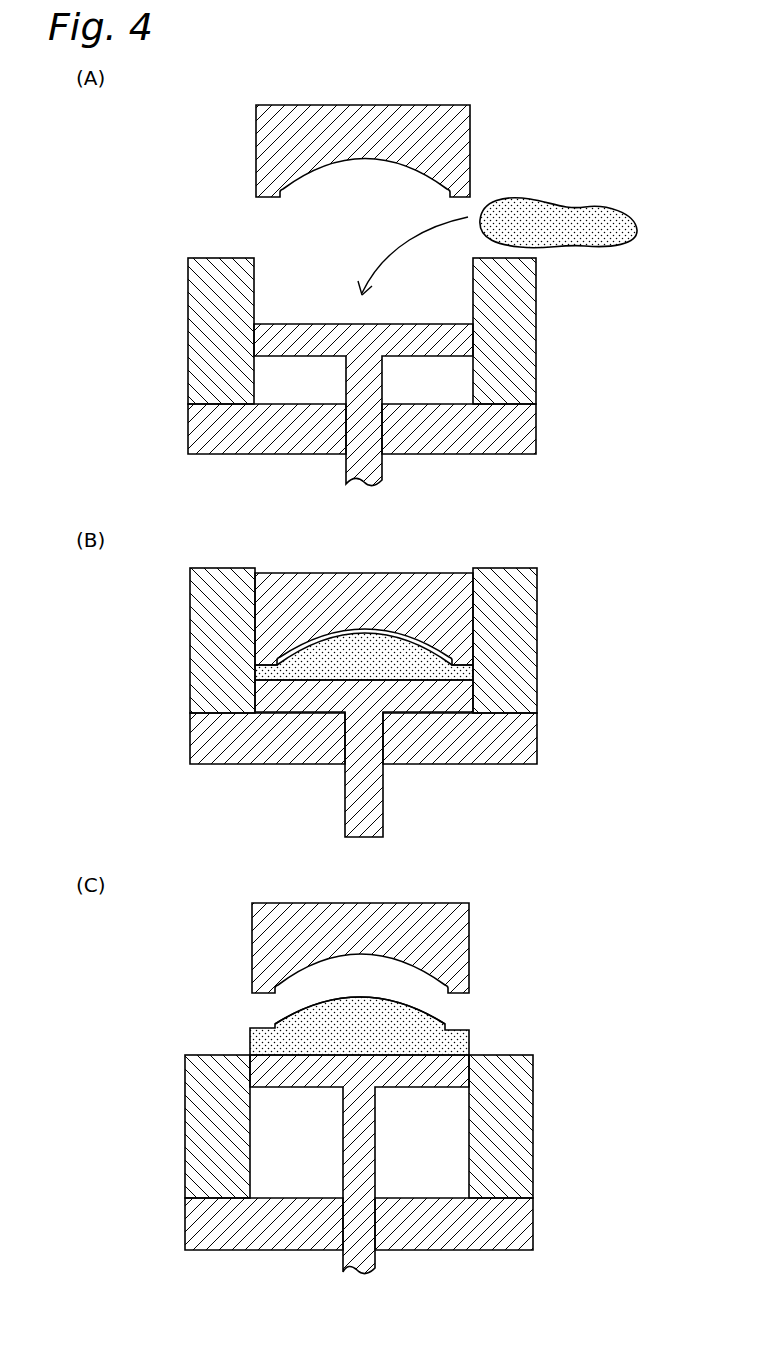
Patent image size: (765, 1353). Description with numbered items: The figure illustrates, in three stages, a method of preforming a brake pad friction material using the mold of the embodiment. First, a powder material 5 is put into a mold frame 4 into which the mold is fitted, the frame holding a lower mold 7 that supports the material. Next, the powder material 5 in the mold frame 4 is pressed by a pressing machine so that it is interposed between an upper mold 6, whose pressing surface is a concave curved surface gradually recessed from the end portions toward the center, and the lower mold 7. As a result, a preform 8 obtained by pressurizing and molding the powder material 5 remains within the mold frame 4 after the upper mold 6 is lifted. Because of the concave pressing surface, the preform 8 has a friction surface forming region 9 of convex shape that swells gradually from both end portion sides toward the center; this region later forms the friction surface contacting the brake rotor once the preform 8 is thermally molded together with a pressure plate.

The mold frame 4 is at (536, 390).
The powder material 5 is at (578, 233).
The upper mold 6 is at (475, 651).
The lower mold 7 is at (475, 342).
The preform 8 is at (250, 1046).
The friction surface forming region 9 is at (285, 1022).